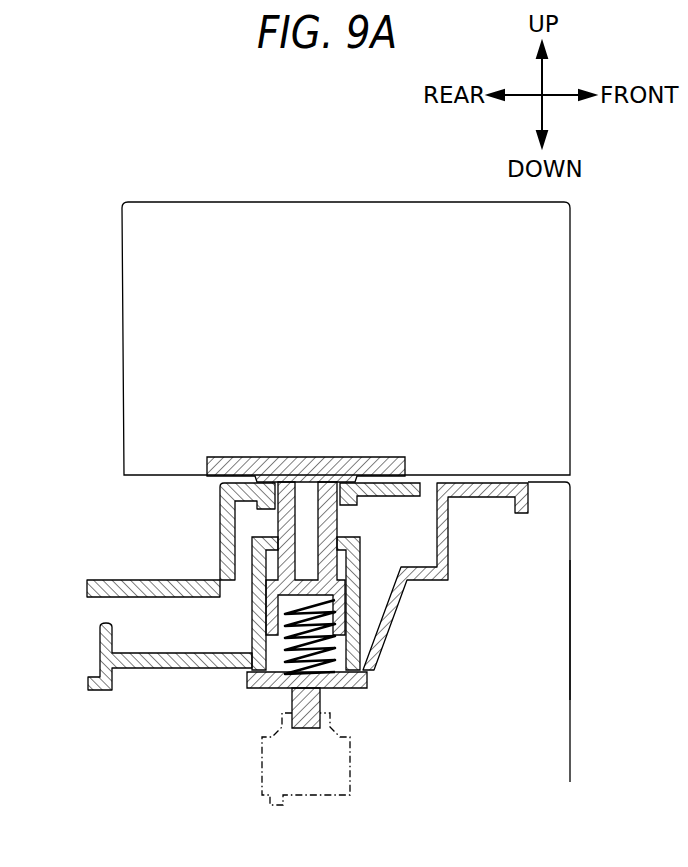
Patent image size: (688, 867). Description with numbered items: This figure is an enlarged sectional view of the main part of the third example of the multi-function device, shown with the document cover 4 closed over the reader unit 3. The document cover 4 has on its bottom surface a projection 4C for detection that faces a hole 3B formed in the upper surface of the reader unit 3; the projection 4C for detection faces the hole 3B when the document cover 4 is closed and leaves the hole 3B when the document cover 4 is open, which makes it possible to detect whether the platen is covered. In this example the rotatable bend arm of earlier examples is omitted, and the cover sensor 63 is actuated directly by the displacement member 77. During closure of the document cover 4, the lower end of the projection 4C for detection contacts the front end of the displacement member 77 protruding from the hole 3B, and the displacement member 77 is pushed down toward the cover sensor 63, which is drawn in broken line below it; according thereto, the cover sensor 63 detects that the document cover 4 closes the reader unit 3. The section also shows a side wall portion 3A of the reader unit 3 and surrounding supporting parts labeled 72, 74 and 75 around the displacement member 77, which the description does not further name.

The document cover 4 is at (214, 193).
The projection for detection 4C is at (317, 480).
The hole 3B is at (285, 483).
The displacement member 77 is at (284, 517).
The bracket 75 is at (220, 520).
The arm member 74 is at (150, 668).
The support bracket 72 is at (368, 668).
The reader unit 3 is at (580, 570).
The side wall of housing 3A is at (570, 617).
The cover sensor 63 is at (262, 758).